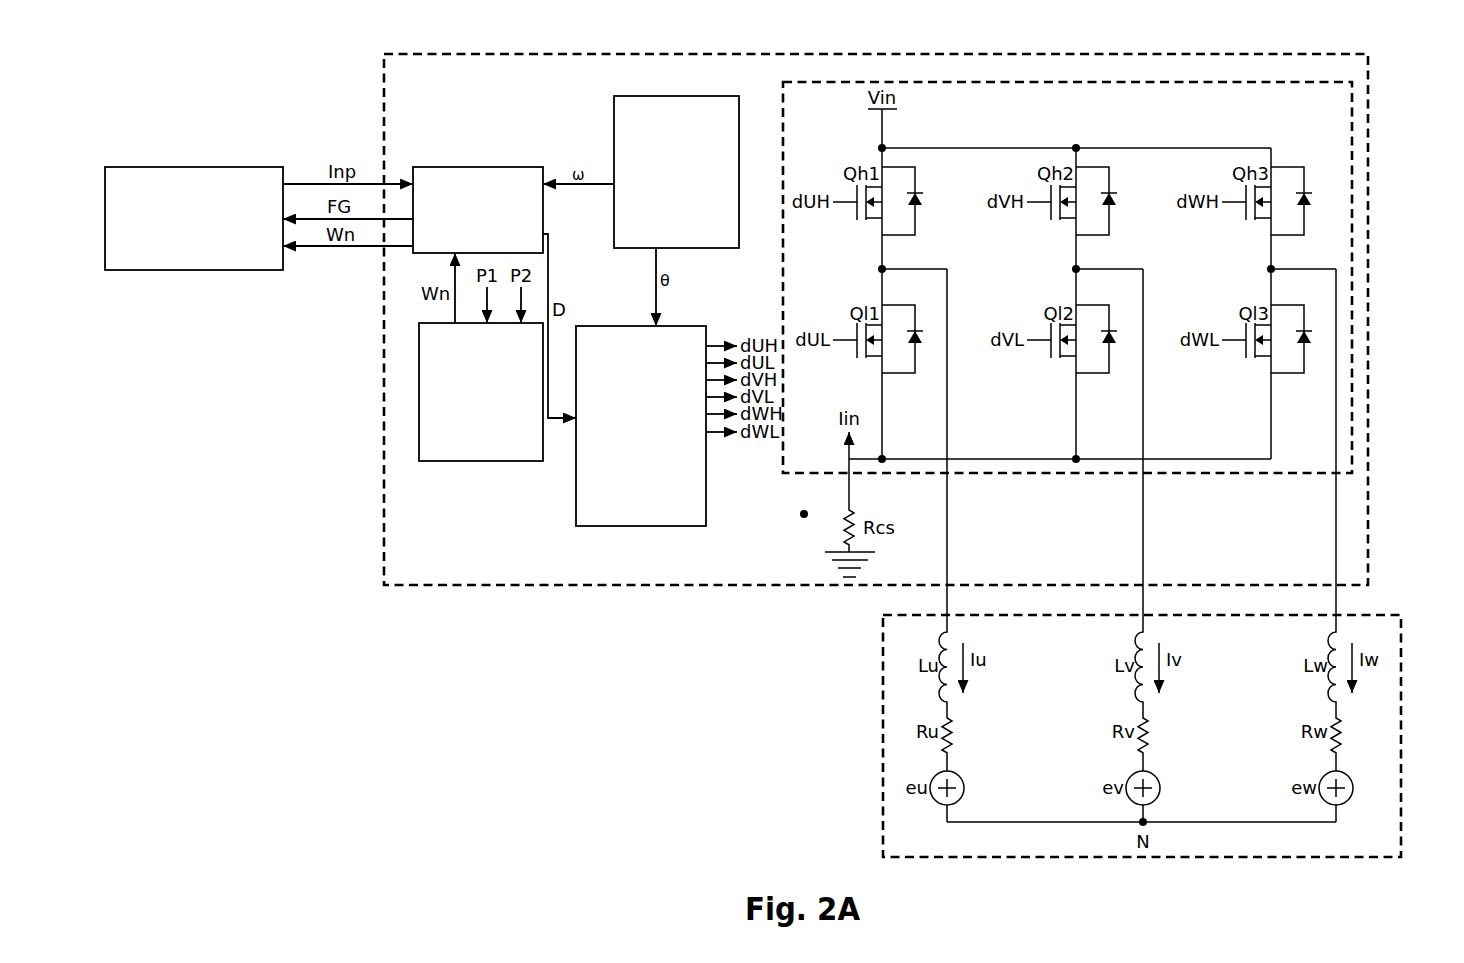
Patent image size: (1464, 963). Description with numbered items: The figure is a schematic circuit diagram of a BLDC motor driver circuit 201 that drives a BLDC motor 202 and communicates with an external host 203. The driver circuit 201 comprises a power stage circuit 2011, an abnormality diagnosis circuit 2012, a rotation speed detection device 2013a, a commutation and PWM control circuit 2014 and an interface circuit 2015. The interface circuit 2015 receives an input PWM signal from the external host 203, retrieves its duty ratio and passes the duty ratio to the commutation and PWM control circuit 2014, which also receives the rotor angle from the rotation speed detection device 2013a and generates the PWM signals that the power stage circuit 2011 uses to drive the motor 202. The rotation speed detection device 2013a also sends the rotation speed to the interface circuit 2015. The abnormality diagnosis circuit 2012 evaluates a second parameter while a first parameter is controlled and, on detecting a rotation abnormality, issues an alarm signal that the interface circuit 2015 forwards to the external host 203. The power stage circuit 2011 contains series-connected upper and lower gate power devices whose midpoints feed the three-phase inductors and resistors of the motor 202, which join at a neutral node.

The BLDC motor driver circuit 201 is at (767, 54).
The power stage circuit 2011 is at (927, 82).
The BLDC motor 202 is at (1387, 615).
The external host 203 is at (178, 242).
The interface circuit 2015 is at (457, 247).
The abnormality diagnosis circuit 2012 is at (460, 439).
The rotation speed detection device 2013a is at (650, 230).
The commutation and PWM control circuit 2014 is at (620, 484).